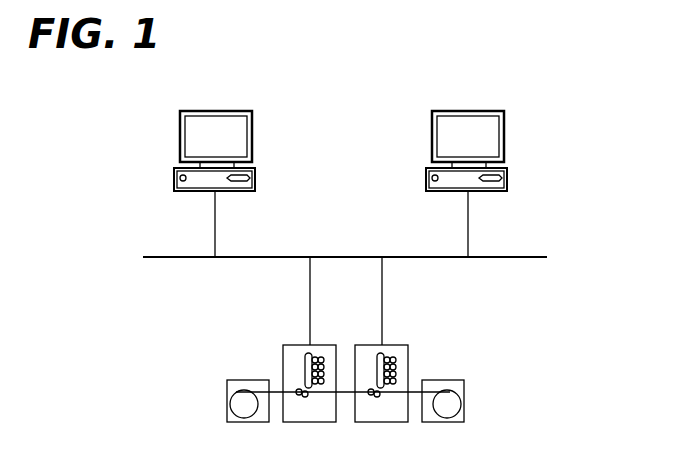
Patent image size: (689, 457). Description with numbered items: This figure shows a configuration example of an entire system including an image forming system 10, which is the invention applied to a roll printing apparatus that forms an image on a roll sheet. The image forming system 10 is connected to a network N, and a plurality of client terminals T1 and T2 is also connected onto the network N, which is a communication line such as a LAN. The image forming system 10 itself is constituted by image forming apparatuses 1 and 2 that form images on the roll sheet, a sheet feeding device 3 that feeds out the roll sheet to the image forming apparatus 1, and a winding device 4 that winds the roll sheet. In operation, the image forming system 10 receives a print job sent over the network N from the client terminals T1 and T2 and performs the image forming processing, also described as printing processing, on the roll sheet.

The image forming apparatus 1 is at (397, 345).
The image forming apparatus 2 is at (294, 345).
The sheet feeding device 3 is at (463, 381).
The winding device 4 is at (228, 381).
The image forming system 10 is at (436, 321).
The network N is at (548, 256).
The client terminal T1 is at (241, 112).
The client terminal T2 is at (493, 112).